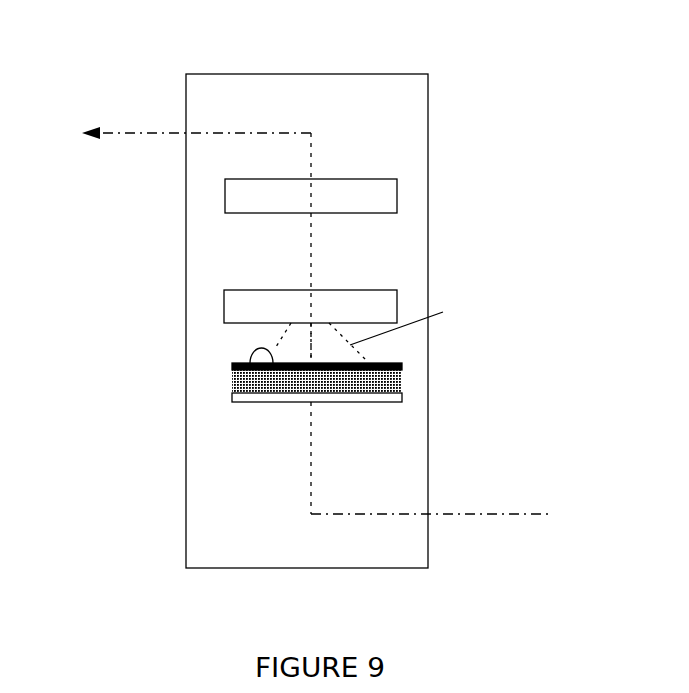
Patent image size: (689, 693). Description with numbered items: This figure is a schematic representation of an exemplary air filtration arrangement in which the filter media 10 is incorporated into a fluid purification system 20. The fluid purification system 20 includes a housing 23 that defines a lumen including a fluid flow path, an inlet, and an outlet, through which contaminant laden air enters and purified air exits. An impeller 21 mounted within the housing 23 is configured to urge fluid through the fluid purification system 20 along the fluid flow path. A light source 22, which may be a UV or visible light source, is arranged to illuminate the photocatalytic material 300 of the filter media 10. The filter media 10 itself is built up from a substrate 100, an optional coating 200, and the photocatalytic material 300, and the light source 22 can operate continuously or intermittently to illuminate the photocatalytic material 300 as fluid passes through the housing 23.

The fluid purification system 20 is at (468, 38).
The housing 23 is at (428, 198).
The impeller 21 is at (311, 196).
The light source 22 is at (364, 325).
The photocatalytic material 300 is at (300, 365).
The coating 200 is at (232, 373).
The filter media 10 is at (413, 373).
The substrate 100 is at (232, 397).